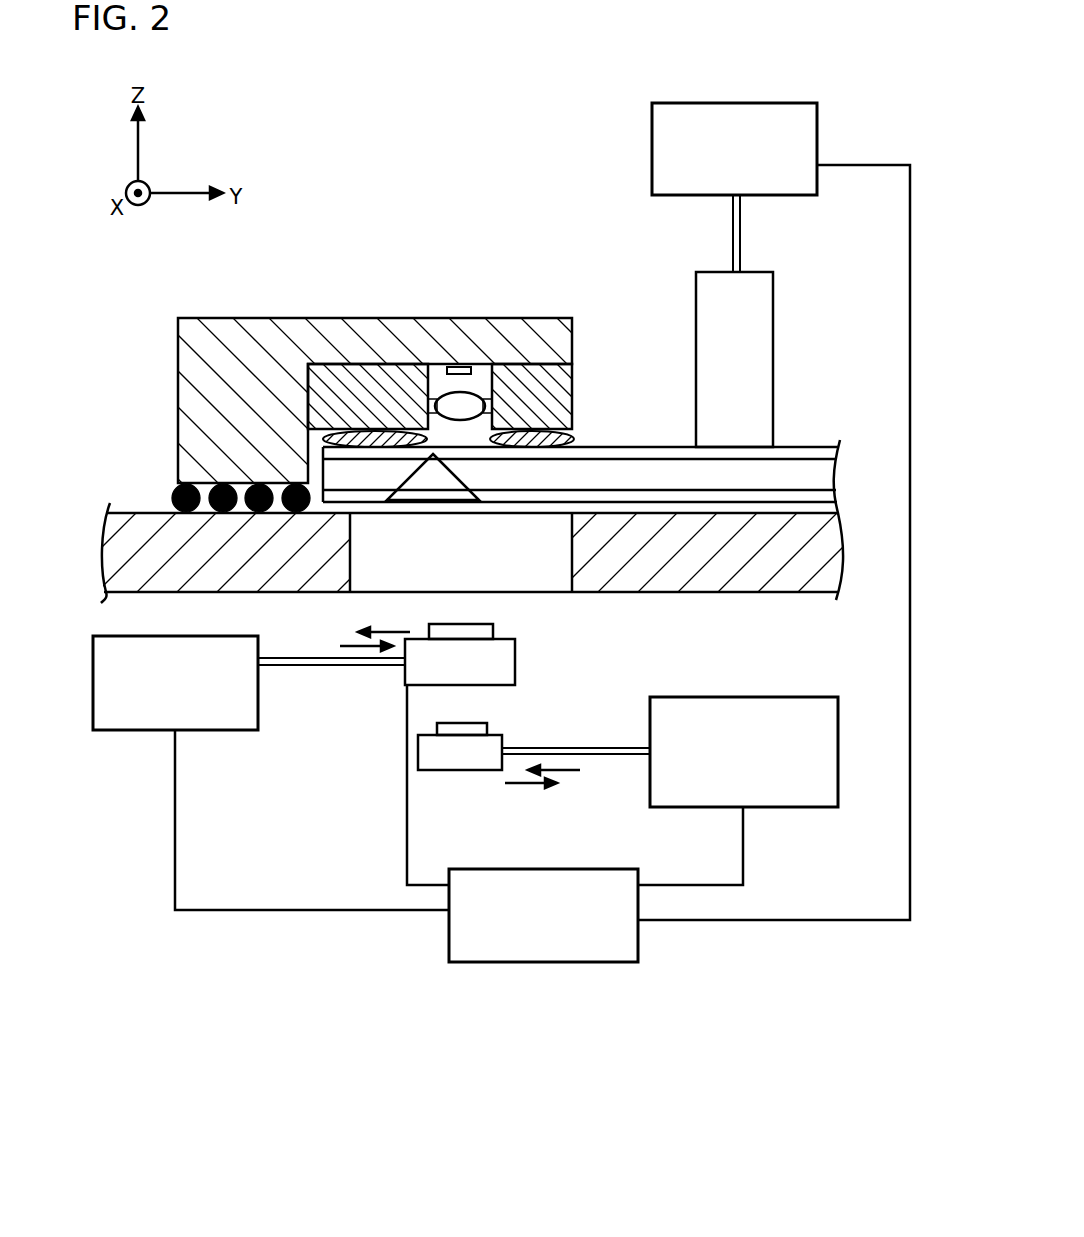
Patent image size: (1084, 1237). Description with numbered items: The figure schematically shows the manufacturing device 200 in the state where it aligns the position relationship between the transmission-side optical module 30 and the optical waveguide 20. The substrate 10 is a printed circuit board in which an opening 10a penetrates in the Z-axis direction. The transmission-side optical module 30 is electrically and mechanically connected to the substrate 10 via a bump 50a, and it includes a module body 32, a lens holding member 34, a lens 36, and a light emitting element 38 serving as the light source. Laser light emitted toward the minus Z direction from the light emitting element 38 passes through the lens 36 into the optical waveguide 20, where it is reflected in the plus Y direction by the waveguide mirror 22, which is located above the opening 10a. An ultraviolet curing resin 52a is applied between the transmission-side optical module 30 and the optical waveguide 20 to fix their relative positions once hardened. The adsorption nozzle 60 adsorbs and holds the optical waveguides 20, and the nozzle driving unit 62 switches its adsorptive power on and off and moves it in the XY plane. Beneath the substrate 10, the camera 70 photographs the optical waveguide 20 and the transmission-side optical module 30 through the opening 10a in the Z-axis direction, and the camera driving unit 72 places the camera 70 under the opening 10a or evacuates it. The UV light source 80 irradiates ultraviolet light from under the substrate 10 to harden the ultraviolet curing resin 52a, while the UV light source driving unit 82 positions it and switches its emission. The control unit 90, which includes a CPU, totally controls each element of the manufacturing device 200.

The substrate 10 is at (697, 592).
The opening 10a is at (572, 592).
The optical waveguide 20 is at (806, 447).
The waveguide mirror 22 is at (453, 482).
The transmission-side optical module 30 is at (350, 280).
The module body 32 is at (260, 318).
The lens holding member 34 is at (573, 395).
The lens 36 is at (475, 393).
The light emitting element 38 is at (462, 366).
The bump 50a is at (172, 490).
The ultraviolet curing resin 52a is at (573, 437).
The adsorption nozzle 60 is at (773, 275).
The nozzle driving unit 62 is at (797, 103).
The camera 70 is at (515, 680).
The camera driving unit 72 is at (252, 730).
The UV light source 80 is at (480, 770).
The UV light source driving unit 82 is at (787, 697).
The control unit 90 is at (603, 869).
The manufacturing device 200 is at (761, 972).